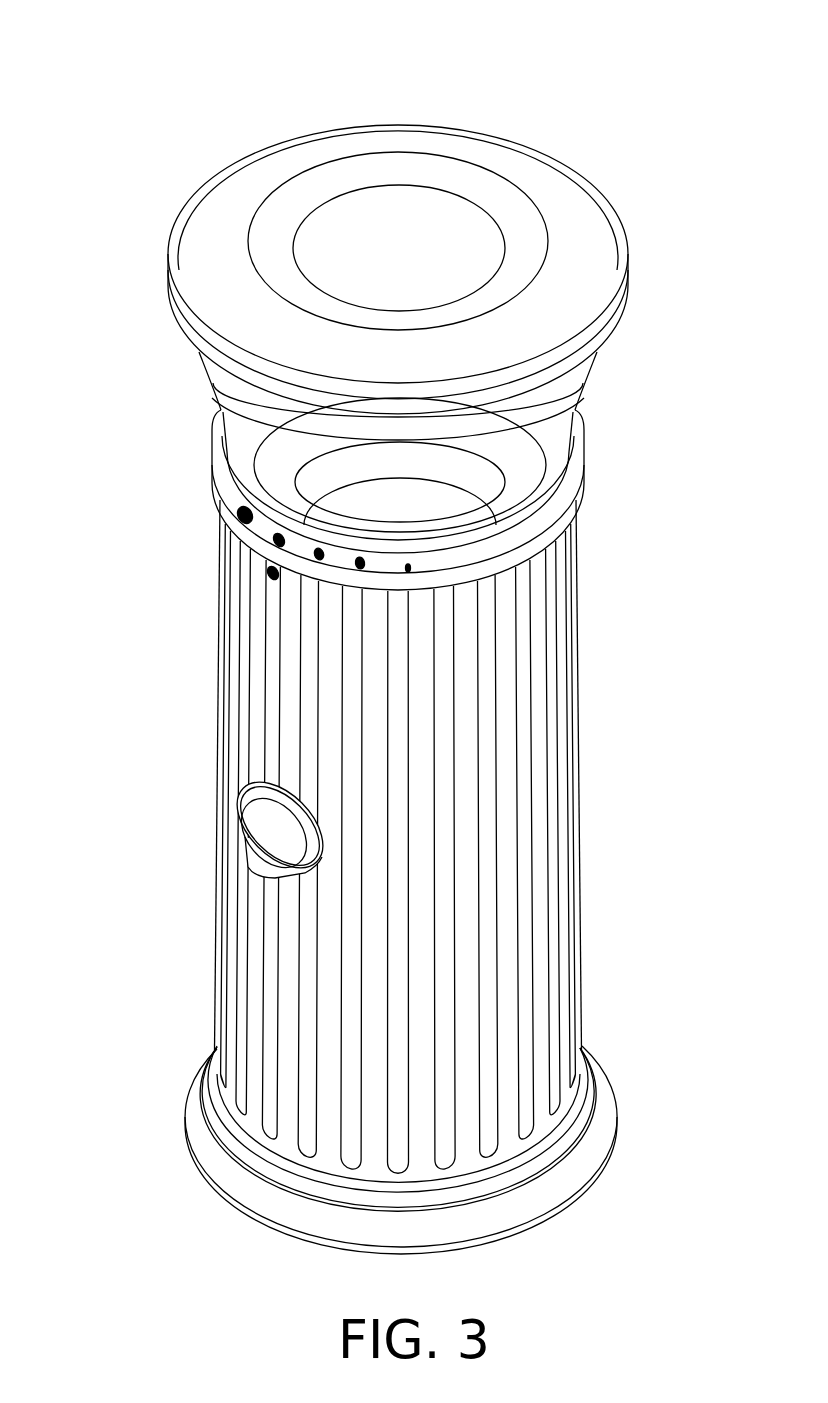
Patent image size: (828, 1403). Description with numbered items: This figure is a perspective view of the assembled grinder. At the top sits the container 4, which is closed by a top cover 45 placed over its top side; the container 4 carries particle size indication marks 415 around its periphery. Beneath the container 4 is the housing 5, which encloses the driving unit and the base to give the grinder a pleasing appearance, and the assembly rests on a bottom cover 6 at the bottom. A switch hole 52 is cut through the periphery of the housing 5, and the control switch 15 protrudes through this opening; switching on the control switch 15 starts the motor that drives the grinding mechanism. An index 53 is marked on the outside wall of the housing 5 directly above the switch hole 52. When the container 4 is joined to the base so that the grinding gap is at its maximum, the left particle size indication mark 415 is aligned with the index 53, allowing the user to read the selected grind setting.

The container 4 is at (555, 428).
The top cover 45 is at (417, 165).
The housing 5 is at (562, 802).
The bottom cover 6 is at (223, 1200).
The particle size indication marks 415 is at (240, 526).
The index 53 is at (273, 575).
The switch hole 52 is at (257, 785).
The control switch 15 is at (270, 825).